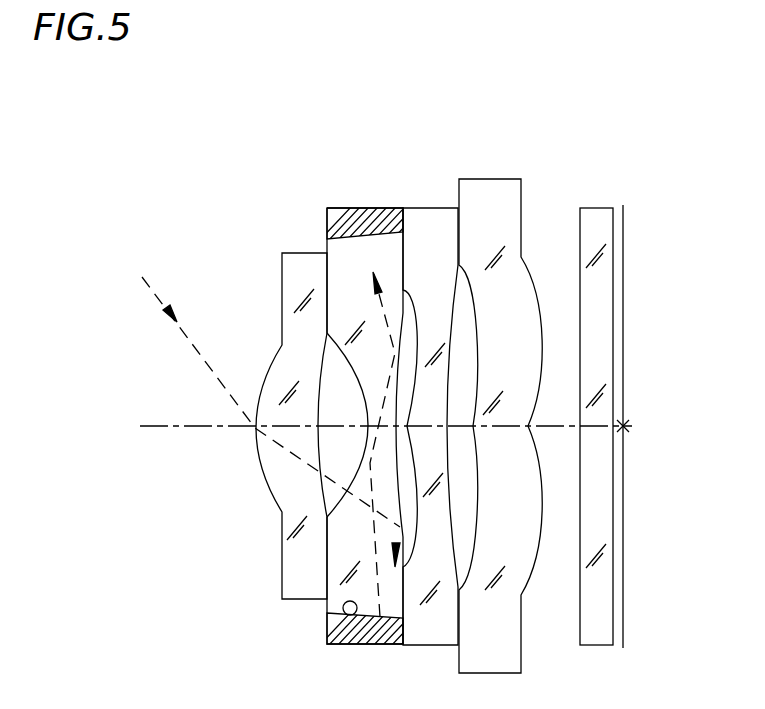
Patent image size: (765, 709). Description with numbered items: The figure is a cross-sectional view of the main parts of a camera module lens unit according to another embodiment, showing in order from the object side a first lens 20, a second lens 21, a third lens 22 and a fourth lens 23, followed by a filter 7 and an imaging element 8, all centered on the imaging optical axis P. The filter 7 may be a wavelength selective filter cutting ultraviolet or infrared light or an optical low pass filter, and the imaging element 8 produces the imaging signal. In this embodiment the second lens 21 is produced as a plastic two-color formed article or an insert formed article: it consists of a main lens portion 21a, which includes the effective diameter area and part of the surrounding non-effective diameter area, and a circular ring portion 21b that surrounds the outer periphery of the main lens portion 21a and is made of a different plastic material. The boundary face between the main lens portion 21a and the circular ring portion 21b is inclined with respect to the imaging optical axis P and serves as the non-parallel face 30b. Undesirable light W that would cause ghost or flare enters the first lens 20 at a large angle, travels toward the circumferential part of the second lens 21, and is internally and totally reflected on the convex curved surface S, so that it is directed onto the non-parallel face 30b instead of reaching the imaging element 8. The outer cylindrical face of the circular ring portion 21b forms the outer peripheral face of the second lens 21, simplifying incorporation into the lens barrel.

The first lens 20 is at (282, 265).
The second lens 21 is at (313, 415).
The main lens portion 21a is at (333, 543).
The circular ring portion 21b is at (328, 627).
The third lens 22 is at (433, 208).
The fourth lens 23 is at (507, 179).
The non-parallel face 30b is at (350, 615).
The filter 7 is at (590, 208).
The imaging element 8 is at (623, 485).
The undesirable light W is at (200, 357).
The imaging optical axis P is at (177, 426).
The convex curved surface S is at (398, 518).